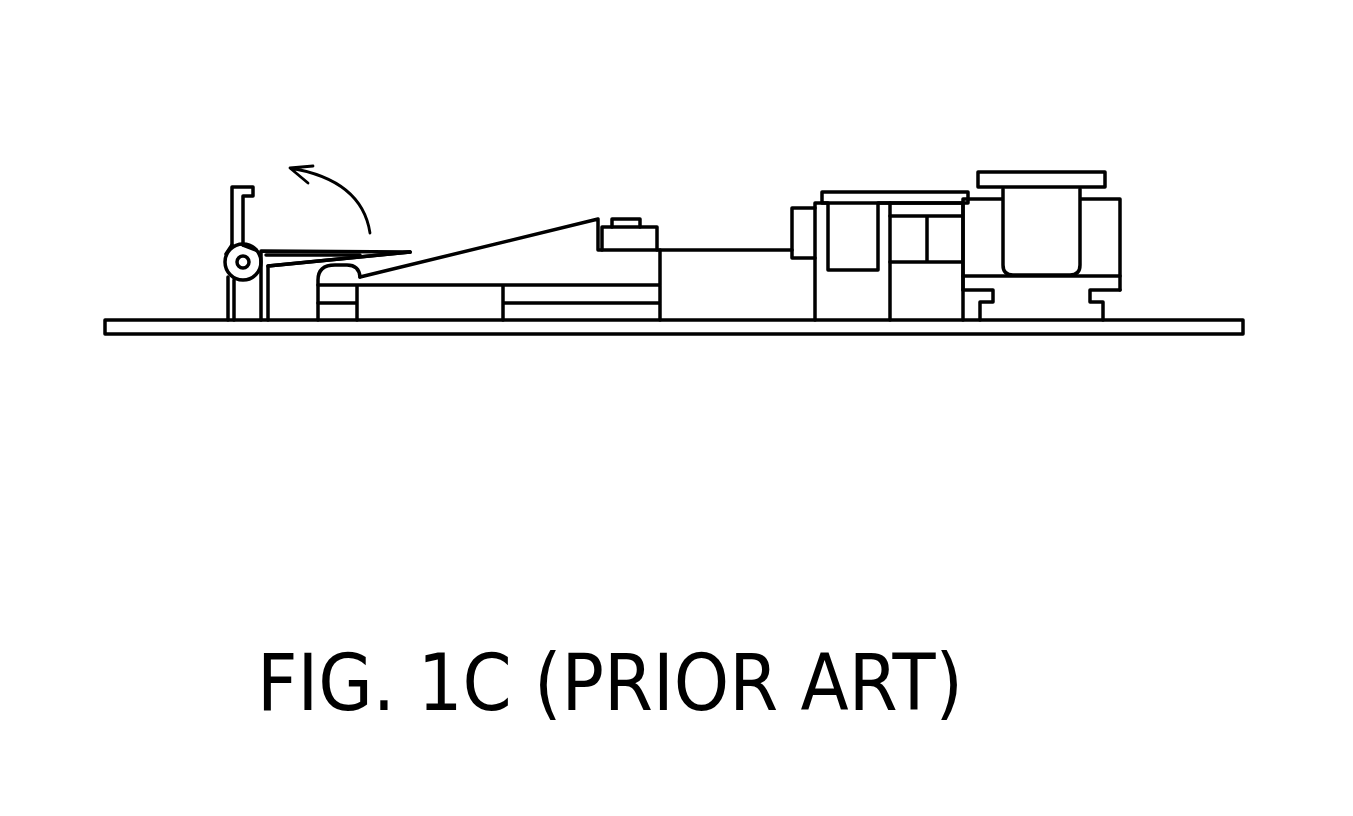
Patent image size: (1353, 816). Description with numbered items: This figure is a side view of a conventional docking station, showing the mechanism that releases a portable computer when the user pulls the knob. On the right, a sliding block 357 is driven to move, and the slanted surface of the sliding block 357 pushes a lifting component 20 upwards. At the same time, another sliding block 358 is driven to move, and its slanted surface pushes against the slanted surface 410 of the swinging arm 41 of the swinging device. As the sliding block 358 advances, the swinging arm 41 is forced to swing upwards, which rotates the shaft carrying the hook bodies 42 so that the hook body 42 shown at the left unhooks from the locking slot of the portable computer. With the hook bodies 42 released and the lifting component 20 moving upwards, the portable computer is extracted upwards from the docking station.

The lifting component 20 is at (1045, 183).
The swinging arm 41 is at (284, 253).
The hook body 42 is at (236, 193).
The sliding block 357 is at (1110, 240).
The sliding block 358 is at (494, 262).
The slanted surface 410 is at (283, 290).